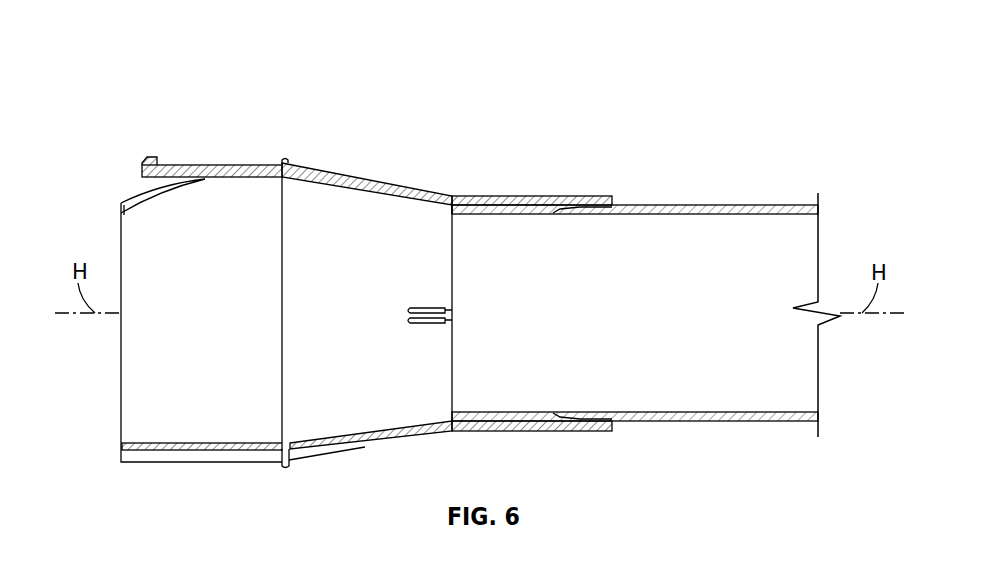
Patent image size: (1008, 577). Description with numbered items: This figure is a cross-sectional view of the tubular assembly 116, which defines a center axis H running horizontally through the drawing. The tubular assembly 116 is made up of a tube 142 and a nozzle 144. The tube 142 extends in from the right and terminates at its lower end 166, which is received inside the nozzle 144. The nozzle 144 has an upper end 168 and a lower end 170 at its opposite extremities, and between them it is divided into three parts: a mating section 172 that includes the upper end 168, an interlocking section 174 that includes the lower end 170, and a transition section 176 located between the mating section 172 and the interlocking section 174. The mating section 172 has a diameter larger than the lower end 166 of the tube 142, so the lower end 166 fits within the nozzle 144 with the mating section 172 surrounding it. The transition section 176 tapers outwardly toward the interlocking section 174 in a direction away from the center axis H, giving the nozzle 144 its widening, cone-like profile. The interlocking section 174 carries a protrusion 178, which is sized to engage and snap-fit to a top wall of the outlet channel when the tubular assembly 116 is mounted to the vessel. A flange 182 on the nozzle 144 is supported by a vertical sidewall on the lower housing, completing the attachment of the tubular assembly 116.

The tubular assembly 116 is at (722, 95).
The tube 142 is at (694, 205).
The nozzle 144 is at (309, 164).
The lower end 166 is at (468, 210).
The upper end 168 is at (585, 205).
The lower end 170 is at (127, 452).
The mating section 172 is at (525, 196).
The interlocking section 174 is at (198, 165).
The transition section 176 is at (358, 452).
The protrusion 178 is at (145, 158).
The flange 182 is at (282, 160).